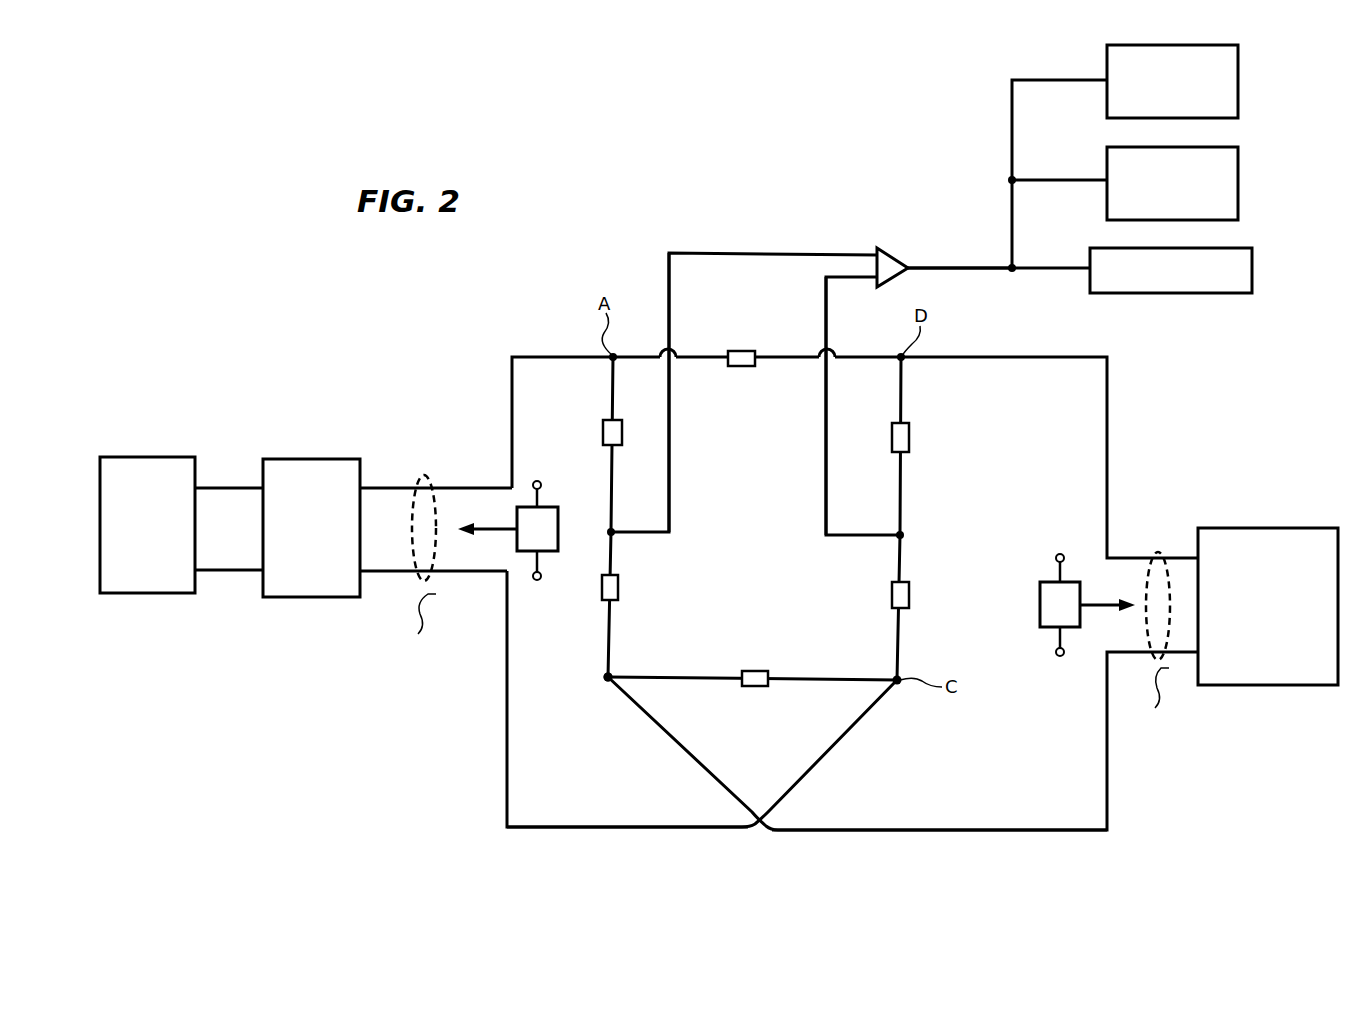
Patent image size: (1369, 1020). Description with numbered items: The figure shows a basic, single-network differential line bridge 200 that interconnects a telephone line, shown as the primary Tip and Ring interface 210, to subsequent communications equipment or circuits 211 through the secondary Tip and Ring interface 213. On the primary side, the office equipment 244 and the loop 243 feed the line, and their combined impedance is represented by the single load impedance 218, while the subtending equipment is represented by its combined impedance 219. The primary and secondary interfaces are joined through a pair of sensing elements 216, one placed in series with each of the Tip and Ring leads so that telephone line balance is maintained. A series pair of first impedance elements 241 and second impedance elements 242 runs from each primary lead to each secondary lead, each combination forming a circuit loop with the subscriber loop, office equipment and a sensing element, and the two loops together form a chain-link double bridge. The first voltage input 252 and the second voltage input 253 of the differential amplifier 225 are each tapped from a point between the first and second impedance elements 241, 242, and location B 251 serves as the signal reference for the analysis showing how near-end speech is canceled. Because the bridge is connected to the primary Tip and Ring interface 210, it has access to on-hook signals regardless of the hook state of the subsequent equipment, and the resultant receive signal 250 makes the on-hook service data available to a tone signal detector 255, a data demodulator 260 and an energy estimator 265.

The differential line bridge 200 is at (631, 220).
The primary Tip and Ring interface 210 is at (428, 471).
The subsequent communications equipment or circuits 211 is at (1298, 528).
The secondary Tip and Ring interface 213 is at (1156, 546).
The sensing element Zs 216 is at (742, 722).
The impedance ZL 218 is at (550, 513).
The impedance Z2 of the subtending equipment 219 is at (1040, 598).
The differential amplifier 225 is at (893, 248).
The impedance element Z1 241 is at (936, 618).
The impedance element Z2 242 is at (950, 436).
The loop 243 is at (283, 459).
The office equipment 244 is at (160, 457).
The receive signal 250 is at (965, 266).
The location B 251 is at (604, 676).
The voltage input V1 252 is at (824, 469).
The voltage input V2 253 is at (670, 508).
The tone signal detector 255 is at (1240, 174).
The data demodulator 260 is at (1254, 270).
The energy estimator 265 is at (1240, 72).